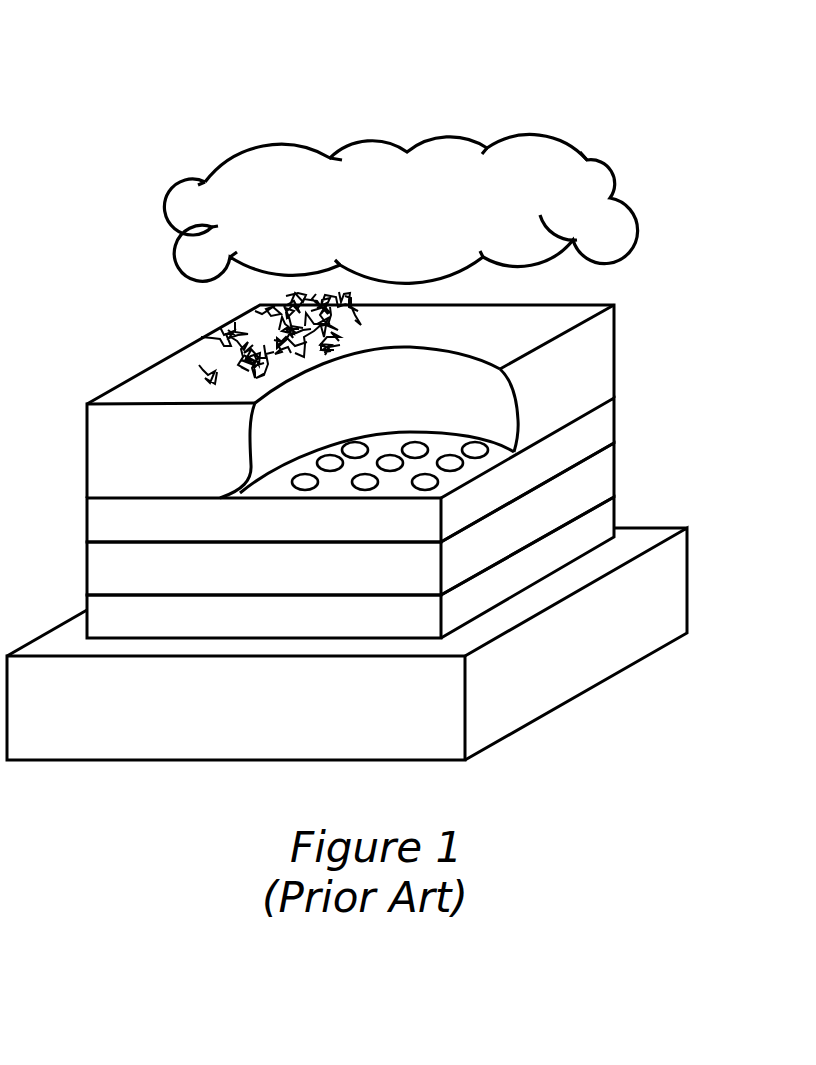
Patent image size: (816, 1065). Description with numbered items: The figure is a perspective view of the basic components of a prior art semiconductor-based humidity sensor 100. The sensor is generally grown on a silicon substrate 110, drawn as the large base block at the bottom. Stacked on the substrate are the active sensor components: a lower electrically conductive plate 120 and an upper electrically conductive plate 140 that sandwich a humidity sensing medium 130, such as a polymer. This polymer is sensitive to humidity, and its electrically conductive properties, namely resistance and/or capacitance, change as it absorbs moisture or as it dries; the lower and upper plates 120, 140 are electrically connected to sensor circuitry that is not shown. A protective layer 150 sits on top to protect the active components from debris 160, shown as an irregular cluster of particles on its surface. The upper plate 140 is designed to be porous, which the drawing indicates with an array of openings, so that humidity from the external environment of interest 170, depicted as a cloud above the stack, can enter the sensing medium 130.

The semiconductor humidity sensor 100 is at (150, 40).
The silicon substrate 110 is at (614, 653).
The lower electrically conductive plate 120 is at (615, 515).
The humidity sensing medium 130 is at (615, 472).
The upper electrically conductive plate 140 is at (615, 420).
The protective layer 150 is at (615, 360).
The debris 160 is at (185, 292).
The external environment of interest 170 is at (630, 176).